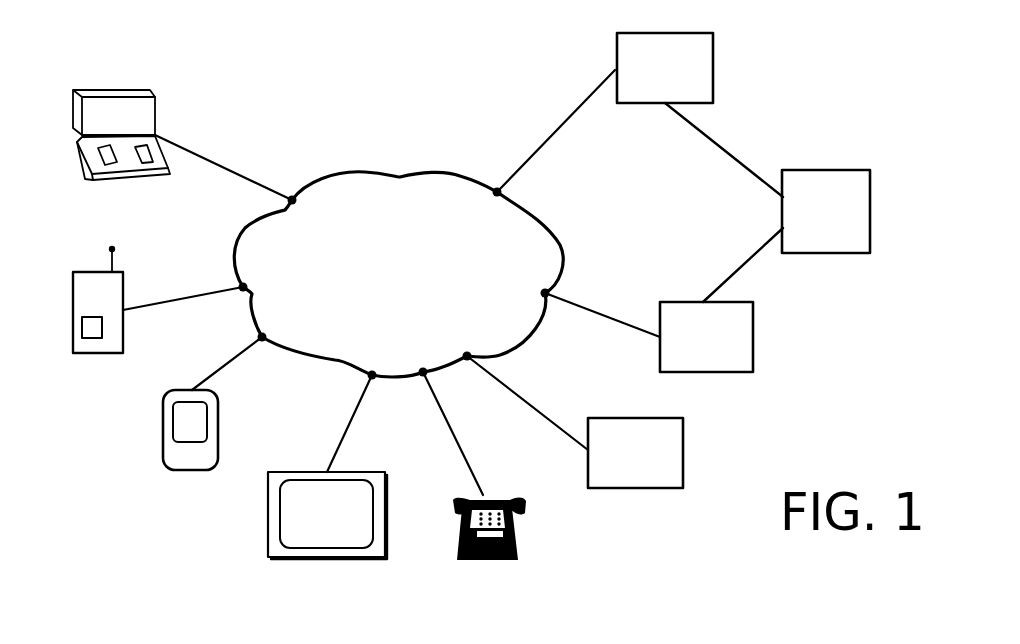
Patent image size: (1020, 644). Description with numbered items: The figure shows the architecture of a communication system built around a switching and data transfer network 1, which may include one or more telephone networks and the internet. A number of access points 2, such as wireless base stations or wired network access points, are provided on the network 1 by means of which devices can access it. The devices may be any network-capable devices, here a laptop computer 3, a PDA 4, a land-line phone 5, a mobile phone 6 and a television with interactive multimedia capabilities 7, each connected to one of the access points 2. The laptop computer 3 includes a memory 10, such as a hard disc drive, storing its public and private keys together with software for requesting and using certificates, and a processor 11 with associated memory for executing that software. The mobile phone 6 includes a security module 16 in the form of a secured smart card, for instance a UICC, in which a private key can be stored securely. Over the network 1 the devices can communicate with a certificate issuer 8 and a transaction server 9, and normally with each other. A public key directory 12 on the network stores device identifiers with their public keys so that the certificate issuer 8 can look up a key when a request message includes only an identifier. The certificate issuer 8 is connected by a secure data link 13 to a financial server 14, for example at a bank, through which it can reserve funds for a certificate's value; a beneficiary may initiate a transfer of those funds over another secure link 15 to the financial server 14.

The switching and data transfer network 1 is at (391, 282).
The access point 2 is at (294, 203).
The laptop computer 3 is at (82, 168).
The PDA 4 is at (163, 437).
The land-line phone 5 is at (517, 558).
The mobile phone 6 is at (73, 275).
The television with interactive multimedia capabilities 7 is at (283, 559).
The certificate issuer 8 is at (733, 374).
The transaction server 9 is at (713, 67).
The memory 10 is at (112, 183).
The processor 11 is at (153, 181).
The public key directory 12 is at (635, 490).
The secure data link 13 is at (750, 263).
The financial server 14 is at (870, 215).
The secure link 15 is at (718, 148).
The security module 16 is at (82, 330).